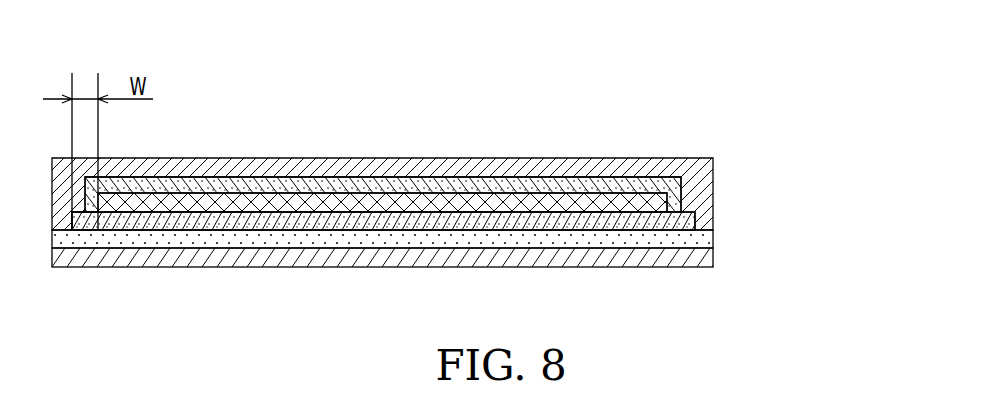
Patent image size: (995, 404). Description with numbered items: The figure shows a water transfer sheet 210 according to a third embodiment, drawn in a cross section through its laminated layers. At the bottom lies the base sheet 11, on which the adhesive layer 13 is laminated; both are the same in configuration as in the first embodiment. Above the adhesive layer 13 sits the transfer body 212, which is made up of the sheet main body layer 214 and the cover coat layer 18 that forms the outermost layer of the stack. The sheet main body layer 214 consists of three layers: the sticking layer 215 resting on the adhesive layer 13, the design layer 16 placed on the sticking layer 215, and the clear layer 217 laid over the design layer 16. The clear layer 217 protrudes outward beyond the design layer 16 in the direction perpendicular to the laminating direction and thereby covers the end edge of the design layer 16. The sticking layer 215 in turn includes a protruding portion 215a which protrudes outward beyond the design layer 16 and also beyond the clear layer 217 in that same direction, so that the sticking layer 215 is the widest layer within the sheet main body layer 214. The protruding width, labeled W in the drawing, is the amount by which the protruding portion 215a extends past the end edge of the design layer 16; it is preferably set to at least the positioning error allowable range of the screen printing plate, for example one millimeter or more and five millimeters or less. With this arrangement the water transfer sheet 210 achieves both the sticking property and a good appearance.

The water transfer sheet 210 is at (478, 179).
The transfer body 212 is at (478, 223).
The sheet main body layer 214 is at (455, 245).
The cover coat layer 18 is at (677, 166).
The clear layer 217 is at (672, 183).
The design layer 16 is at (672, 203).
The sticking layer 215 is at (700, 222).
The protruding portion 215a is at (98, 230).
The adhesive layer 13 is at (699, 239).
The base sheet 11 is at (704, 257).